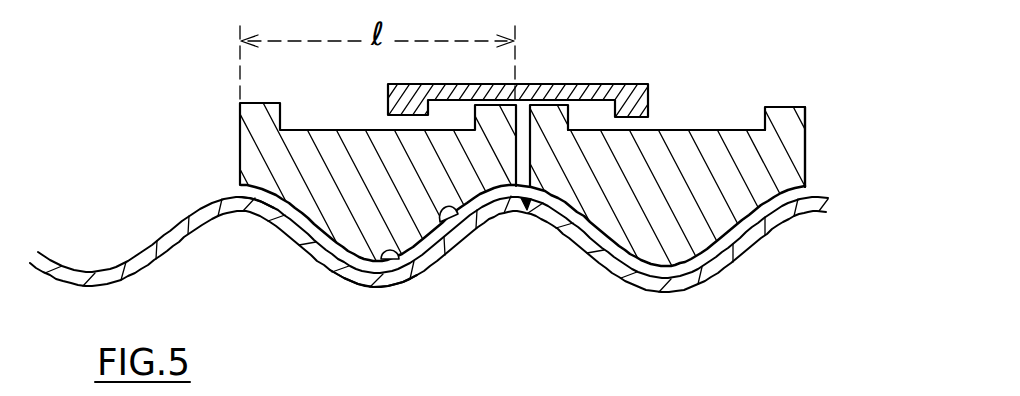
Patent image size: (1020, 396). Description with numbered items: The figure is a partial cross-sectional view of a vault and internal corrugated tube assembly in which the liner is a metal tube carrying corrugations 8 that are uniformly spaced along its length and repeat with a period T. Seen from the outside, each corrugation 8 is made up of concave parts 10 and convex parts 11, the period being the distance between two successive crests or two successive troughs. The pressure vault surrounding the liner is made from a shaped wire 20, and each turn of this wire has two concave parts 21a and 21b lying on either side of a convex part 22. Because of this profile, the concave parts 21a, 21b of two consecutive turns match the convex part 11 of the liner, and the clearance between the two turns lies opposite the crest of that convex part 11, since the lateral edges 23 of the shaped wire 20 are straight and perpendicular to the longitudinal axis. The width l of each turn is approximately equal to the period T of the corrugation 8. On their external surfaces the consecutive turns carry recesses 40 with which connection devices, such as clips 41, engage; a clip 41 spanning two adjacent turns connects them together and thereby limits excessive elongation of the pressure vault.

The corrugation 8 is at (632, 294).
The concave part 10 is at (368, 290).
The convex part 11 is at (526, 208).
The shaped wire 20 is at (811, 114).
The concave part 21a is at (451, 227).
The concave part 21b is at (266, 208).
The convex part 22 is at (400, 265).
The lateral edge 23 is at (806, 153).
The recess 40 is at (714, 130).
The clip 41 is at (584, 85).